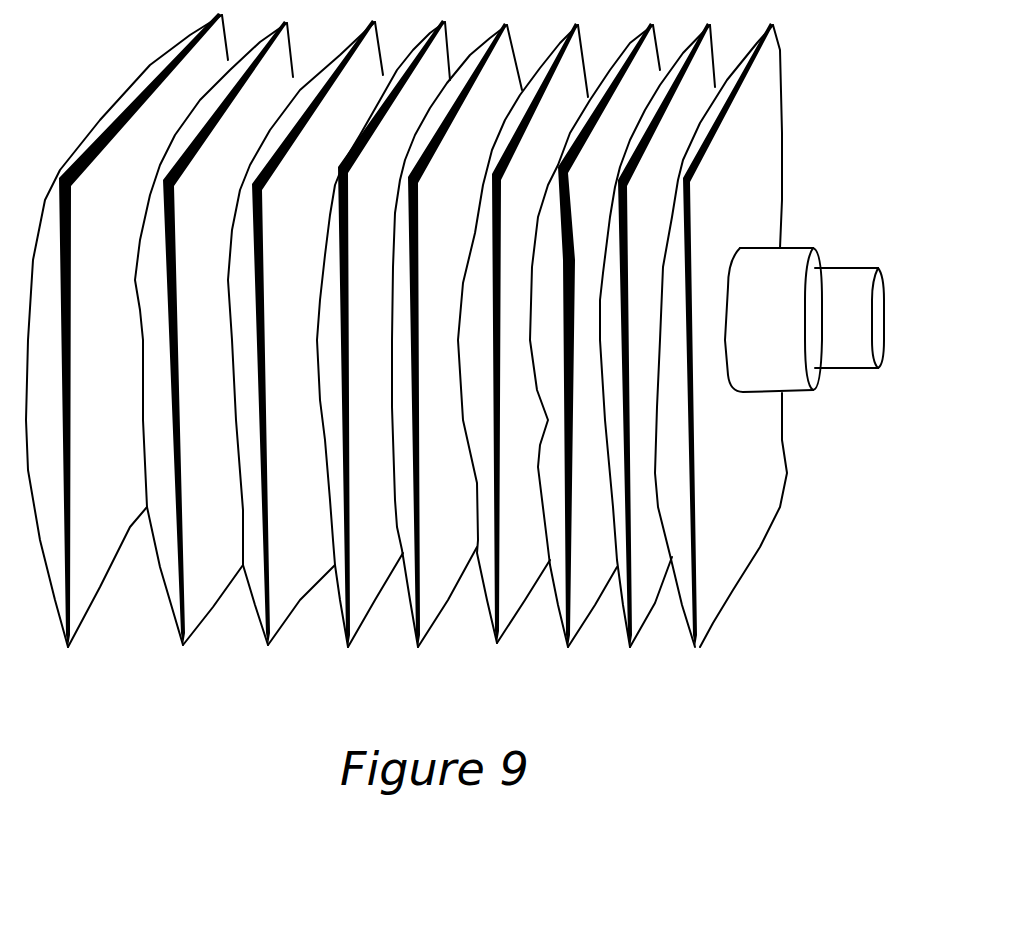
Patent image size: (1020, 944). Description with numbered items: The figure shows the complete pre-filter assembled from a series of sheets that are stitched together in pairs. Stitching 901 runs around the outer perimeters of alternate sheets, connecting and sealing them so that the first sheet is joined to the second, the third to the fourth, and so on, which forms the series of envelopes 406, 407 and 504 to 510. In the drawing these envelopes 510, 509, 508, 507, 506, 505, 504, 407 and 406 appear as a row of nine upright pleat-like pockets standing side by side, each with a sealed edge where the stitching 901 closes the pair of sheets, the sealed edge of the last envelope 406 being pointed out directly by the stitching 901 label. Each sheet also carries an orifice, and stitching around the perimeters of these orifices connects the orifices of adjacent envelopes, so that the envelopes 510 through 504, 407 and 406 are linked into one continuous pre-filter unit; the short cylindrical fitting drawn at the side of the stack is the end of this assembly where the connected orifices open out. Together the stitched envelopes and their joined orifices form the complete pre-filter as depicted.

The envelope 510 is at (87, 602).
The envelope 509 is at (200, 603).
The envelope 508 is at (280, 598).
The envelope 507 is at (367, 590).
The envelope 506 is at (443, 587).
The envelope 505 is at (517, 597).
The envelope 504 is at (580, 590).
The envelope 407 is at (645, 593).
The envelope 406 is at (713, 590).
The stitching 901 is at (693, 513).